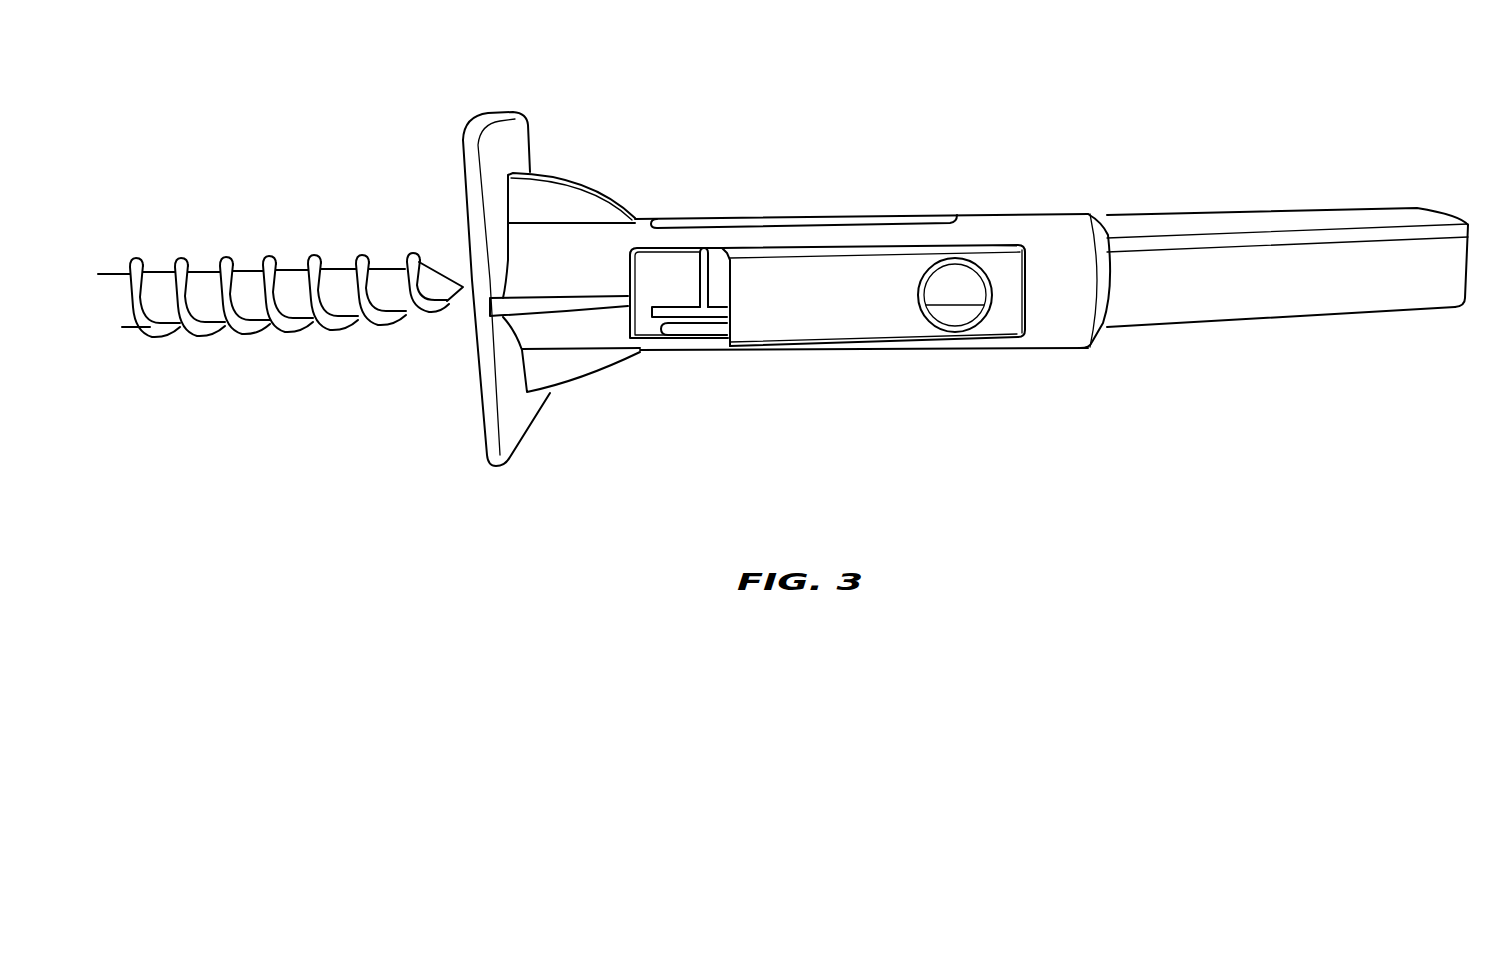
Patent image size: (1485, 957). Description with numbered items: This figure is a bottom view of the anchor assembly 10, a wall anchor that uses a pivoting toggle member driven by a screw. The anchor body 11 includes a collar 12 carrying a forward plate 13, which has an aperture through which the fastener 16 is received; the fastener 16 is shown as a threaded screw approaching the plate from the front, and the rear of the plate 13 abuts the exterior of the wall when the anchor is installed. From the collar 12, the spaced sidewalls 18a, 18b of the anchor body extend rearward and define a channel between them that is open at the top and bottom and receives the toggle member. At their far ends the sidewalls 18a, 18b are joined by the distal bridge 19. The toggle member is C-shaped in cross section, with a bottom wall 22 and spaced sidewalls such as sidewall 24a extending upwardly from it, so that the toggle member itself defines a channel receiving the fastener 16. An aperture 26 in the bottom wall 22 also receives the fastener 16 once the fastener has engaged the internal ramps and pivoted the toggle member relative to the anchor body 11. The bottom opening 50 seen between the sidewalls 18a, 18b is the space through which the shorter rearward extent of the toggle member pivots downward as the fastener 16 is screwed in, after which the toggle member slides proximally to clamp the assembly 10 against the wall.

The anchor assembly 10 is at (1003, 92).
The anchor body 11 is at (698, 217).
The collar 12 is at (605, 393).
The forward plate 13 is at (513, 142).
The fastener 16 is at (152, 275).
The sidewall 18a is at (1046, 229).
The sidewall 18b is at (1048, 350).
The distal bridge 19 is at (1070, 295).
The bottom wall 22 is at (1281, 305).
The sidewall 24a is at (1353, 218).
The aperture 26 is at (947, 312).
The bottom opening 50 is at (657, 328).